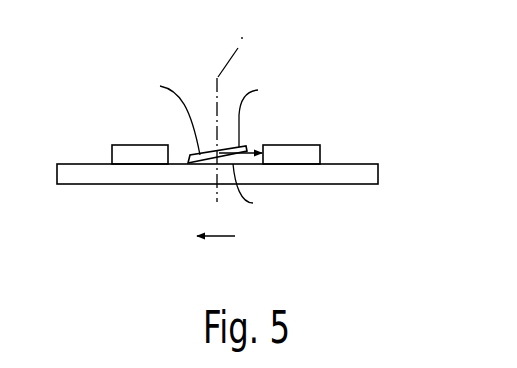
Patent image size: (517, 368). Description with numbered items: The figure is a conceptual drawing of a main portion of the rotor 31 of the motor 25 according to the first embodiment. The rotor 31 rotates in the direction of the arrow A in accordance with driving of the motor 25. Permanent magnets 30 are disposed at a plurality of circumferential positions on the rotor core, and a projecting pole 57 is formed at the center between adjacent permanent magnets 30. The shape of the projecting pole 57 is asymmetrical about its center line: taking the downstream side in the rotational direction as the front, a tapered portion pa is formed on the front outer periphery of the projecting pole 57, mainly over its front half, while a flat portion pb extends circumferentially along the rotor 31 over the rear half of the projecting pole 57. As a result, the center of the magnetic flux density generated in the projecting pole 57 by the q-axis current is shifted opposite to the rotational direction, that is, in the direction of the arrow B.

The motor 25 is at (340, 78).
The permanent magnet 30 is at (120, 145).
The rotor 31 is at (373, 153).
The projecting pole 57 is at (204, 167).
The tapered portion pa is at (165, 113).
The flat portion pb is at (263, 111).
The rotational direction arrow A is at (216, 252).
The offset direction arrow B is at (246, 187).